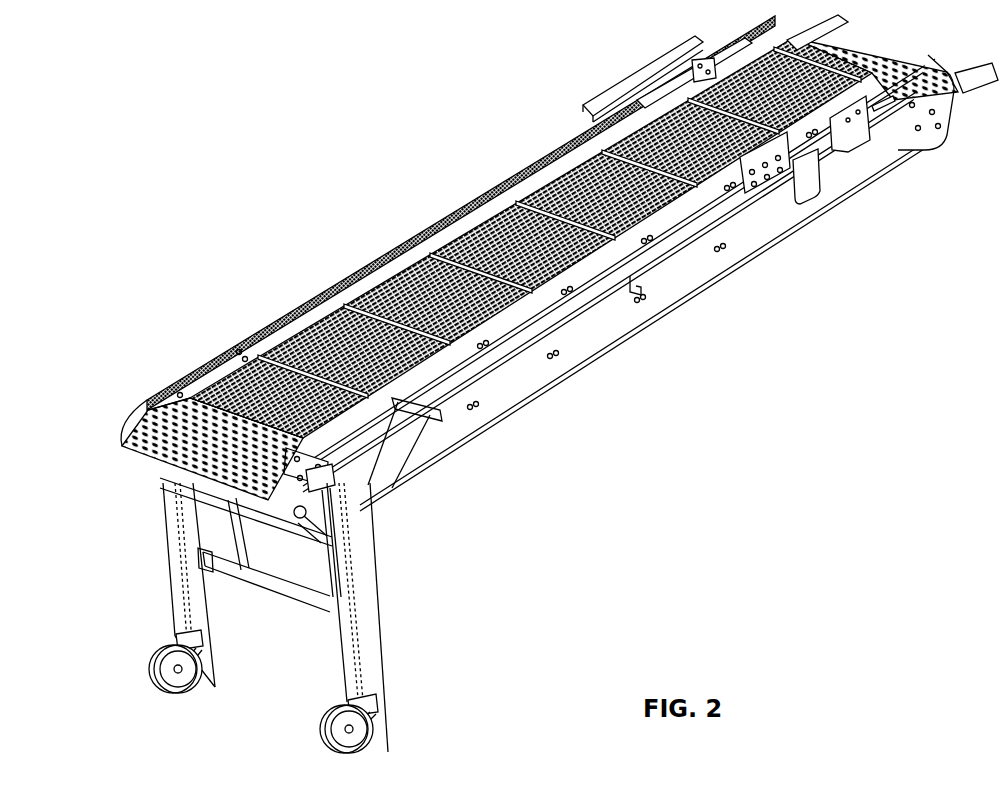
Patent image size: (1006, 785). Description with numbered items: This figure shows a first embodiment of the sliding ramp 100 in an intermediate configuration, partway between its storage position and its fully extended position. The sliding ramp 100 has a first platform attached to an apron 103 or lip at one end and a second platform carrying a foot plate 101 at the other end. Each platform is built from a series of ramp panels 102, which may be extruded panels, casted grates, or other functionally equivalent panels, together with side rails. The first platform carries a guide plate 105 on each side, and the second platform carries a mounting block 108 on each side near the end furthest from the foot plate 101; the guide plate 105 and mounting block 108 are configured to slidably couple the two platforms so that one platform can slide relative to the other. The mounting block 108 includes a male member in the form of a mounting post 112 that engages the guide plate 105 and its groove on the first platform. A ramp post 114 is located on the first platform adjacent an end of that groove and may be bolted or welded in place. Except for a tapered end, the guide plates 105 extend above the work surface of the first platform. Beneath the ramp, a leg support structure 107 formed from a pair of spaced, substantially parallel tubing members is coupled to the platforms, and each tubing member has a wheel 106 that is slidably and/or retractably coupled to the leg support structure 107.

The sliding ramp 100 is at (120, 153).
The foot plate 101 is at (148, 438).
The ramp panels 102 is at (348, 323).
The apron 103 is at (921, 59).
The guide plate 105 is at (522, 157).
The wheel 106 is at (358, 740).
The leg support structure 107 is at (339, 619).
The mounting block 108 is at (648, 75).
The mounting post 112 is at (801, 173).
The ramp post 114 is at (851, 136).